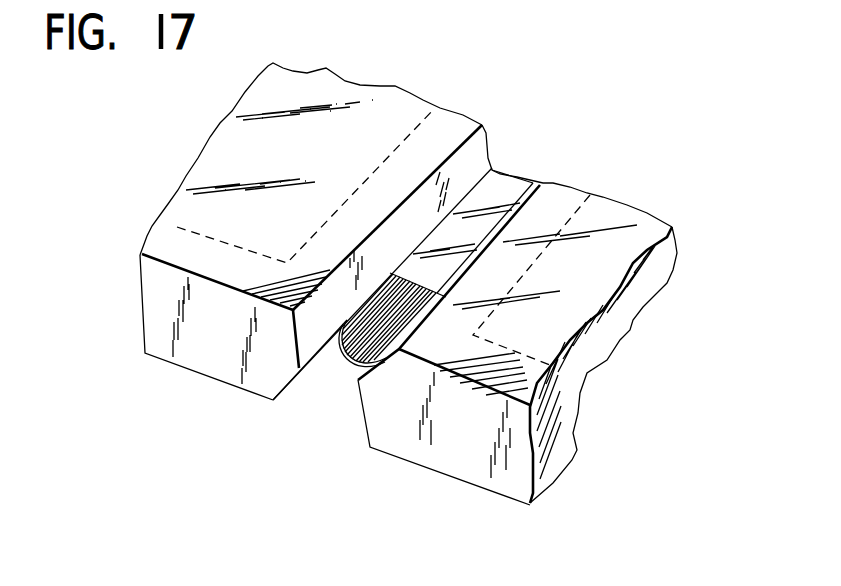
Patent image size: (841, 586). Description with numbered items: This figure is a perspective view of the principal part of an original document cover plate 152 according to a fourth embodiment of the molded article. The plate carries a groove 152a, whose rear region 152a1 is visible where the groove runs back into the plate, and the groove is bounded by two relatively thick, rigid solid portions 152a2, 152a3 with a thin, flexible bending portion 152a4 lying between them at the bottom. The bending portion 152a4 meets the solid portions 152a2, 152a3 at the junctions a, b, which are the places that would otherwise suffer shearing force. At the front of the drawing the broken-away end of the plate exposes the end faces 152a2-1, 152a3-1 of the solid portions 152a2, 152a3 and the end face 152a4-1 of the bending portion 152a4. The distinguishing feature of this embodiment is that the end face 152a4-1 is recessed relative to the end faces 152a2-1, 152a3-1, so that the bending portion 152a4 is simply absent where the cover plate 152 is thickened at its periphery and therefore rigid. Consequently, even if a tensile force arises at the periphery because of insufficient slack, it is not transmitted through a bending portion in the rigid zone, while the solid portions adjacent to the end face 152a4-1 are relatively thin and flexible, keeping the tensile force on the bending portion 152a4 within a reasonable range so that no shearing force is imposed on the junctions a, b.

The original document cover plate 152 is at (622, 215).
The groove 152a is at (507, 157).
The groove rear end 152a1 is at (517, 188).
The solid portion 152a2 is at (427, 194).
The solid portion 152a3 is at (533, 192).
The bending portion 152a4 is at (383, 300).
The end face of solid portion 152a2-1 is at (222, 355).
The end face of solid portion 152a3-1 is at (392, 418).
The end face of bending portion 152a4-1 is at (341, 350).
The junction a is at (340, 338).
The junction b is at (359, 361).